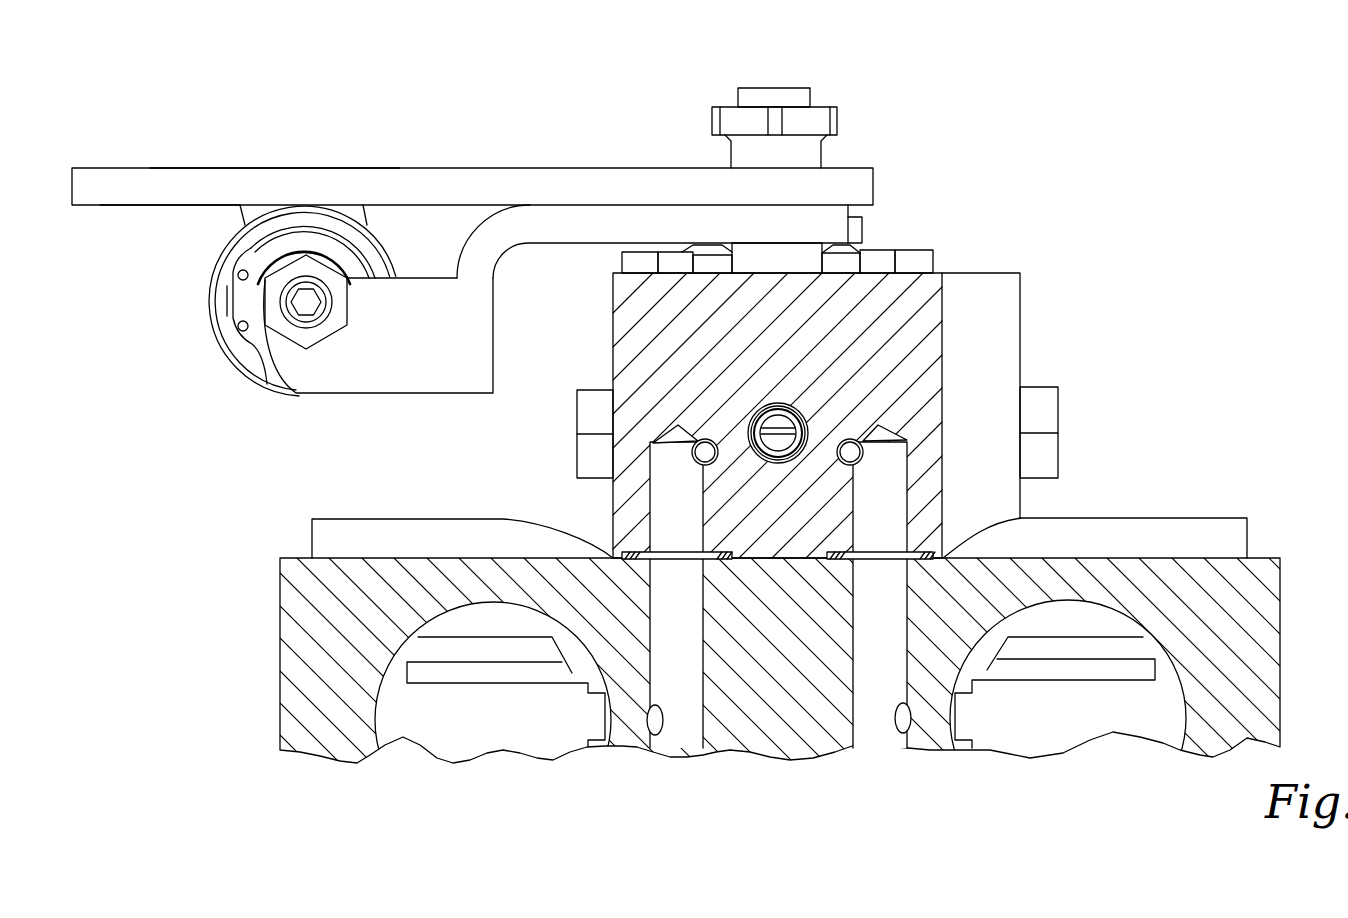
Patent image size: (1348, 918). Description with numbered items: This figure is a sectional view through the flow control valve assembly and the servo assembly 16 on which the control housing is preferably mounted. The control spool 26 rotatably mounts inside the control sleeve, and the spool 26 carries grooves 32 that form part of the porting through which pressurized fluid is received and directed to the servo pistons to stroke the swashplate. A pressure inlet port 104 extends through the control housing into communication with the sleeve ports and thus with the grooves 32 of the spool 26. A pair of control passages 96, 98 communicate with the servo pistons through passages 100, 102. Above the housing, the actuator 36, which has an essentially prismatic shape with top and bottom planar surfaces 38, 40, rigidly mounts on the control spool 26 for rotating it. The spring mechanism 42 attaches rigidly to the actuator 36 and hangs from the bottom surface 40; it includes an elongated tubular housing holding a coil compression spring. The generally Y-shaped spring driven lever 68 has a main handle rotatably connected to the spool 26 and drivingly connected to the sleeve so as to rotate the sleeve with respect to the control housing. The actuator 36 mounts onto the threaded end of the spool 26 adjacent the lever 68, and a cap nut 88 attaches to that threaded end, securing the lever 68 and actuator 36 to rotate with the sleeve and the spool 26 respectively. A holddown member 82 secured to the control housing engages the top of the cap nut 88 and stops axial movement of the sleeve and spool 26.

The servo assembly 16 is at (280, 617).
The control spool 26 is at (775, 447).
The grooves 32 is at (785, 417).
The actuator 36 is at (112, 182).
The top planar surface 38 is at (183, 168).
The bottom planar surface 40 is at (153, 206).
The spring mechanism 42 is at (213, 288).
The spring driven lever 68 is at (348, 395).
The holddown member 82 is at (765, 88).
The cap nut 88 is at (822, 113).
The control passage 96 is at (862, 440).
The control passage 98 is at (660, 435).
The passage 100 is at (887, 488).
The passage 102 is at (677, 492).
The pressure inlet port 104 is at (777, 403).